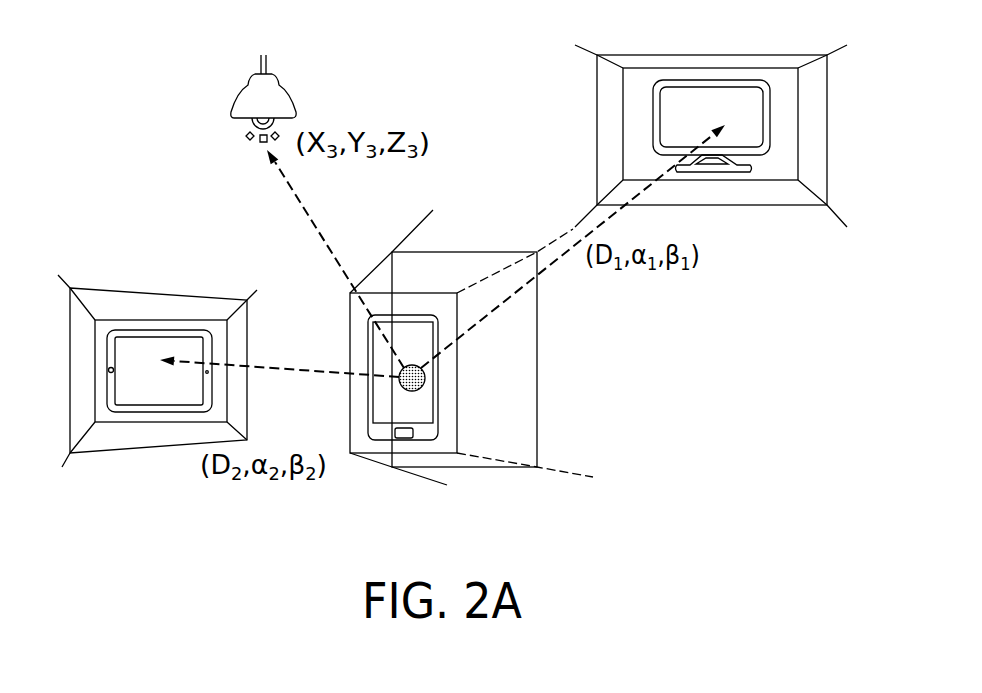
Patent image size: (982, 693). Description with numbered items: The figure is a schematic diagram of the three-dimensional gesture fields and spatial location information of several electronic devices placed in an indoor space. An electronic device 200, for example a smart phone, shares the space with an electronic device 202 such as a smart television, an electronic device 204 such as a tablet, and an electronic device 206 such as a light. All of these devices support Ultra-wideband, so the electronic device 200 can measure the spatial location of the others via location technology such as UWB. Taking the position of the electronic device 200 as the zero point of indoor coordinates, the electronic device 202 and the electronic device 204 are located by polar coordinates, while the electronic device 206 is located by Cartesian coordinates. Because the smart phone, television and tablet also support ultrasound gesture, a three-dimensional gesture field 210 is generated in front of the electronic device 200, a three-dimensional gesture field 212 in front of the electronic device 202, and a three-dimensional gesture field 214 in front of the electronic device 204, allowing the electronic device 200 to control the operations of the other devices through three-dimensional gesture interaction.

The electronic device 200 is at (457, 400).
The electronic device 202 is at (710, 68).
The electronic device 204 is at (158, 332).
The electronic device 206 is at (297, 97).
The 3D gesture field 210 is at (487, 468).
The 3D gesture field 212 is at (788, 207).
The 3D gesture field 214 is at (122, 453).